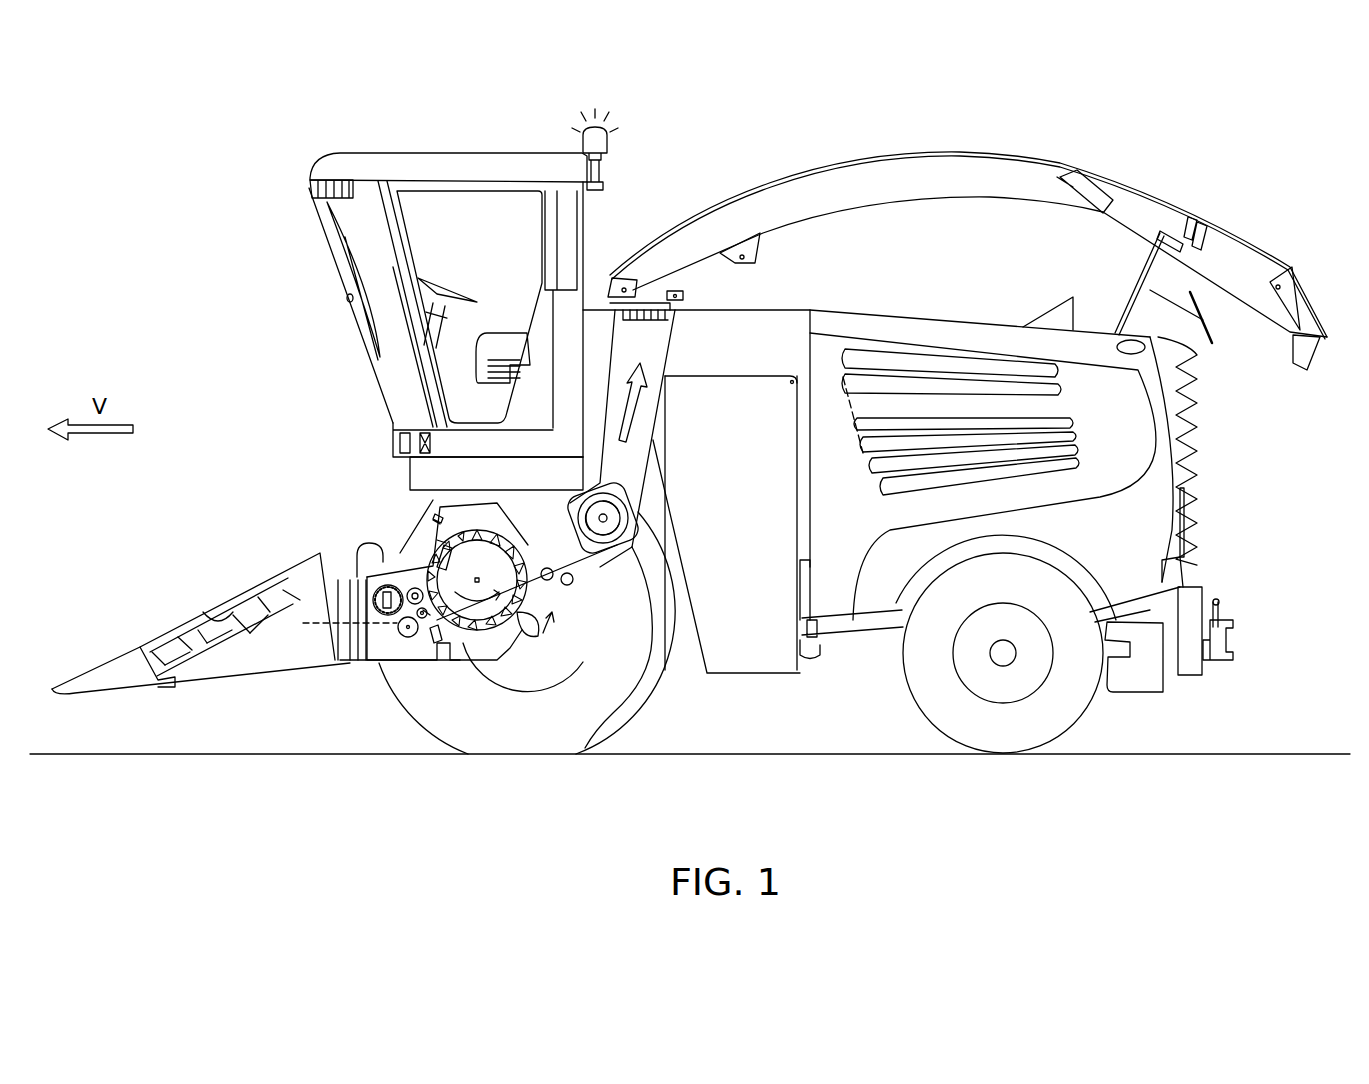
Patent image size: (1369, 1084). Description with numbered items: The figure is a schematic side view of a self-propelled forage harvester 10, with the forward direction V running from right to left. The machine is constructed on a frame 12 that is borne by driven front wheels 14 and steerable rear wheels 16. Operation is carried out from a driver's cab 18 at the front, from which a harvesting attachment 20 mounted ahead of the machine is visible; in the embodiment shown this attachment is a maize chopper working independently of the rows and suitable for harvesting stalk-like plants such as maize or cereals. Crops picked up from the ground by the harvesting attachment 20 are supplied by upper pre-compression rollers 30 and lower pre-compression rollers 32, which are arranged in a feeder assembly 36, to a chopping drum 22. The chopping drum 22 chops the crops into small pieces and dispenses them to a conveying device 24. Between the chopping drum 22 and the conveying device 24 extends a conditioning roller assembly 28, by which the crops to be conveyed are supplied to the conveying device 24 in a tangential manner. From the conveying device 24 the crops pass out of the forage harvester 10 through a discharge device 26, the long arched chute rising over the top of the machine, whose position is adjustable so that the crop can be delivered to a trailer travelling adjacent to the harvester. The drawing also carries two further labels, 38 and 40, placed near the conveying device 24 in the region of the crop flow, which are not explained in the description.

The self-propelled forage harvester 10 is at (163, 373).
The frame 12 is at (868, 623).
The driven front wheels 14 is at (507, 733).
The steerable rear wheels 16 is at (953, 708).
The driver's cab 18 is at (370, 231).
The harvesting attachment 20 is at (210, 598).
The chopping drum 22 is at (478, 614).
The conveying device 24 is at (607, 526).
The discharge device 26 is at (858, 188).
The conditioning roller assembly 28 is at (585, 748).
The upper pre-compression rollers 30 is at (389, 592).
The lower pre-compression rollers 32 is at (421, 619).
The feeder assembly 36 is at (413, 710).
The blower / accelerator 38 is at (547, 568).
The crop flow direction arrow 40 is at (553, 620).